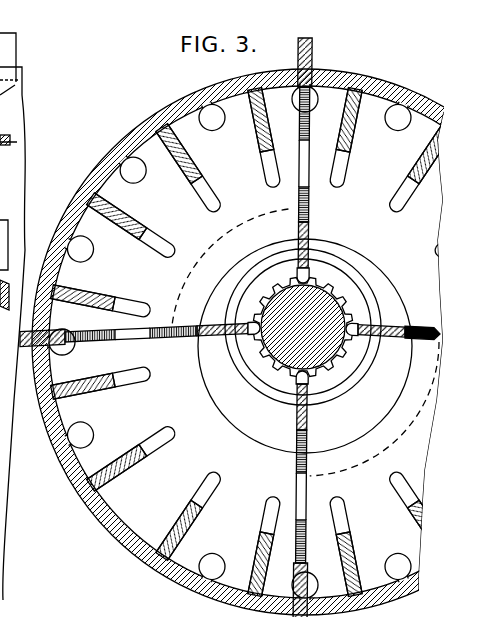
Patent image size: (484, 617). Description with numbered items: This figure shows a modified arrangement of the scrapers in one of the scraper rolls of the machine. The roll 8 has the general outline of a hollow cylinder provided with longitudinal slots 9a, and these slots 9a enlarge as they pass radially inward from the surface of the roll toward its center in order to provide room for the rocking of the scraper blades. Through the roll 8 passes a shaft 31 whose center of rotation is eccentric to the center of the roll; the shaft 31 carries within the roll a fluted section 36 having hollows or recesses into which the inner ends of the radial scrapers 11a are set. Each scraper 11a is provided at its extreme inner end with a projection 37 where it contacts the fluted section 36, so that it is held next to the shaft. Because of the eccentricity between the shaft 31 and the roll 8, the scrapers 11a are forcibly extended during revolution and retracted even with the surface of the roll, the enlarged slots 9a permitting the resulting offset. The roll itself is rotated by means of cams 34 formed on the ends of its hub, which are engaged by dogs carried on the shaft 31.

The scraper roll 8 is at (387, 98).
The slot 9a is at (127, 160).
The radial scraper 11a is at (68, 352).
The cam 34 is at (206, 248).
The fluted section 36 is at (338, 288).
The projection 37 is at (248, 333).
The shaft 31 is at (278, 358).